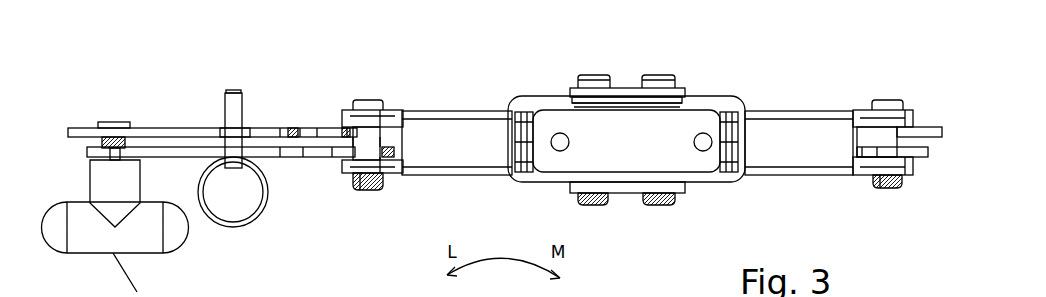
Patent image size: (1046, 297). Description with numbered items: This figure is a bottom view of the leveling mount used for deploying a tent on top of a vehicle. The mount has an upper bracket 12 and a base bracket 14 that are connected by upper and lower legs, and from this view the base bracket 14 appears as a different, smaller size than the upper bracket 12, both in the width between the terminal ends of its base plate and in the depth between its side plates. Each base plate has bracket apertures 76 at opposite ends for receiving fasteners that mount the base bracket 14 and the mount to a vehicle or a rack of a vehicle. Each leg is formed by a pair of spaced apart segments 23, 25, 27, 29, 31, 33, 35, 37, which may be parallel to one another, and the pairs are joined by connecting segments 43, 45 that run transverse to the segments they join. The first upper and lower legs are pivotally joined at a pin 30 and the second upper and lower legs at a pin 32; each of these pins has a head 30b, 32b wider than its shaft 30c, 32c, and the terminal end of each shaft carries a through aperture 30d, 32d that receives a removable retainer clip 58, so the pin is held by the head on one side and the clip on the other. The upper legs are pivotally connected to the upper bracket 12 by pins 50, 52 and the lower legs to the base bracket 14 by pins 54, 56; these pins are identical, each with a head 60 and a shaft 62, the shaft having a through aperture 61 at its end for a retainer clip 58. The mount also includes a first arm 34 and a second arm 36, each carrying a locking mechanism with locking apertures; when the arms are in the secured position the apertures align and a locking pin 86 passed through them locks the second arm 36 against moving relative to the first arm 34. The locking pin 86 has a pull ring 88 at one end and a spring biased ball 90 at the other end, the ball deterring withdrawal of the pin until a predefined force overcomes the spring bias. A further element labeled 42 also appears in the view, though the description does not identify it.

The upper bracket 12 is at (622, 161).
The base bracket 14 is at (690, 120).
The spaced apart segment 23 is at (893, 158).
The spaced apart segment 25 is at (903, 122).
The spaced apart segment 27 is at (367, 152).
The spaced apart segment 29 is at (345, 127).
The pin 30 is at (877, 153).
The head 30b is at (872, 102).
The shaft 30c is at (882, 145).
The through aperture 30d is at (887, 183).
The spaced apart segment 31 is at (863, 168).
The pin 32 is at (358, 164).
The head 32b is at (370, 100).
The shaft 32c is at (367, 178).
The through aperture 32d is at (372, 187).
The spaced apart segment 33 is at (868, 110).
The first arm 34 is at (272, 148).
The spaced apart segment 35 is at (393, 173).
The second arm 36 is at (162, 128).
The spaced apart segment 37 is at (393, 112).
The rail stop 42 is at (112, 121).
The connecting segment 43 is at (787, 163).
The connecting segment 45 is at (438, 163).
The pin 50 is at (648, 75).
The pin 52 is at (597, 75).
The pin 54 is at (660, 90).
The pin 56 is at (588, 90).
The retainer clip 58 is at (372, 190).
The head 60 is at (580, 90).
The through aperture 61 is at (592, 200).
The shaft 62 is at (582, 202).
The bracket aperture 76 is at (560, 133).
The locking pin 86 is at (233, 92).
The pull ring 88 is at (247, 223).
The spring biased ball 90 is at (233, 98).